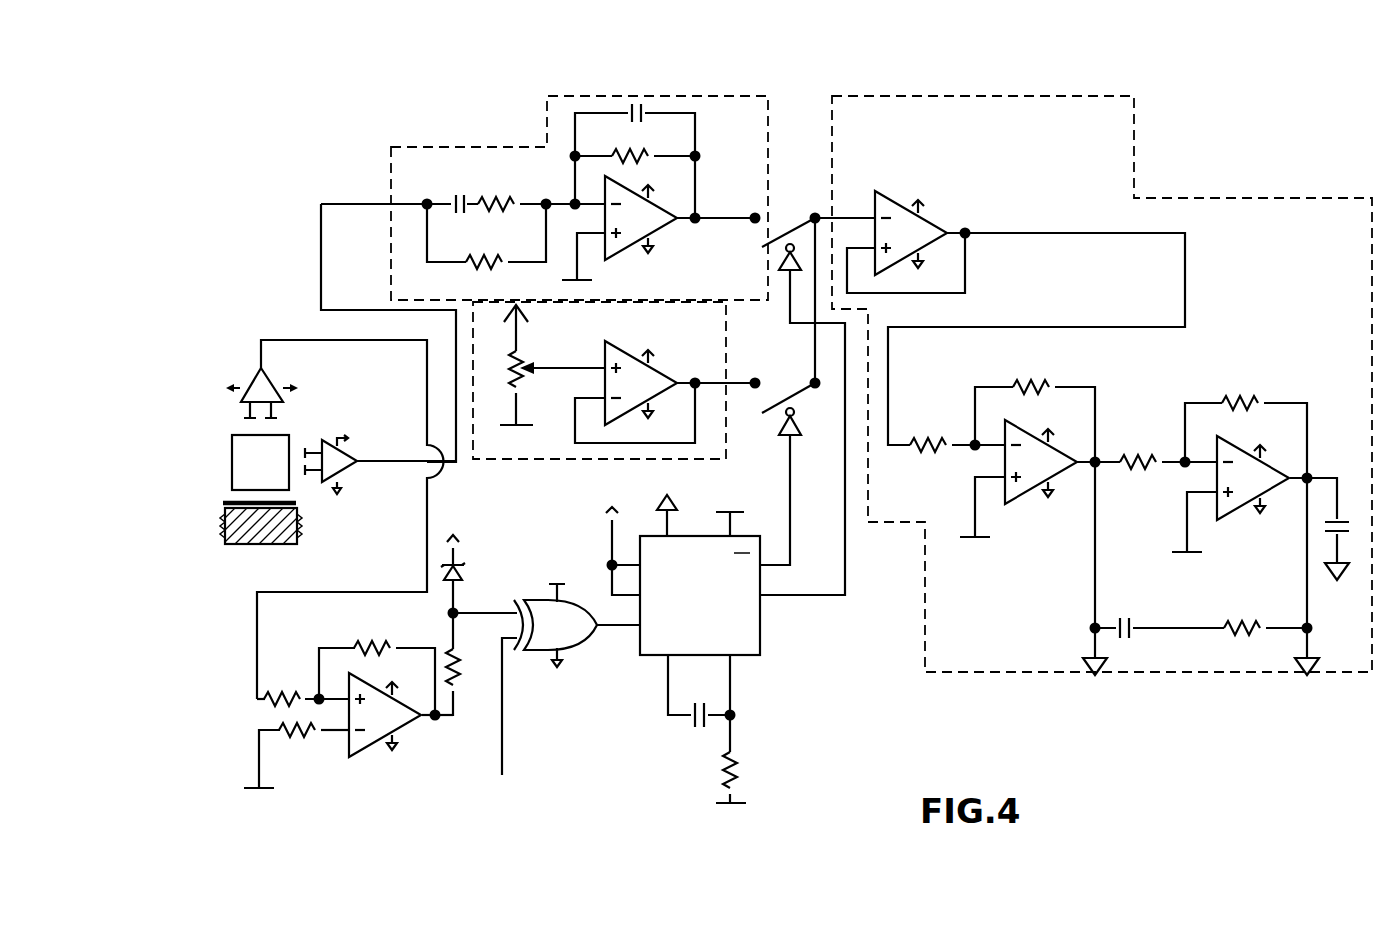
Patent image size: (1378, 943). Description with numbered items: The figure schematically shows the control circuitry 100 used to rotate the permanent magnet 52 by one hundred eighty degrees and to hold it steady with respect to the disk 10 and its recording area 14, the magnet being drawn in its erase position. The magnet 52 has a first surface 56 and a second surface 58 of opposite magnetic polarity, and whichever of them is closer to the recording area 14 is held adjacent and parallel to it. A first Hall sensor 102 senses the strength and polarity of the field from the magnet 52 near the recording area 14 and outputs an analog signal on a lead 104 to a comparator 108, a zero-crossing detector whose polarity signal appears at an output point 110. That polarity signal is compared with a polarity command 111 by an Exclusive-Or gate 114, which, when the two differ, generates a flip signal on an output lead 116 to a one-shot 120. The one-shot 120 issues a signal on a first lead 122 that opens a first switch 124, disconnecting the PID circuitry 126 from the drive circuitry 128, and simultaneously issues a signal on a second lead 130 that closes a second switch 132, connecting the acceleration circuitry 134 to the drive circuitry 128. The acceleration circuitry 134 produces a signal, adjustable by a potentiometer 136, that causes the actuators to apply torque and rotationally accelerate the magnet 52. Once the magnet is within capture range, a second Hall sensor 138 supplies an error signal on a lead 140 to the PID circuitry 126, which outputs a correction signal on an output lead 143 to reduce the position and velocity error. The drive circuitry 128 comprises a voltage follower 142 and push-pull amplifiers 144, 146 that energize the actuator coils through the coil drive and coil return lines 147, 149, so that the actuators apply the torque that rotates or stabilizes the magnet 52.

The disk 10 is at (262, 545).
The recording area 14 is at (243, 503).
The permanent magnet 52 is at (275, 445).
The first surface 56 is at (288, 490).
The second surface 58 is at (238, 436).
The control circuitry 100 is at (1093, 440).
The first Hall sensor 102 is at (266, 368).
The lead 104 is at (255, 659).
The comparator 108 is at (364, 772).
The output point 110 is at (465, 608).
The polarity command 111 is at (505, 765).
The Exclusive-Or gate 114 is at (581, 649).
The output lead 116 is at (615, 627).
The one-shot 120 is at (689, 535).
The first lead 122 is at (850, 565).
The first switch 124 is at (775, 240).
The PID circuitry 126 is at (533, 141).
The drive circuitry 128 is at (1146, 189).
The second lead 130 is at (792, 498).
The second switch 132 is at (802, 377).
The acceleration circuitry 134 is at (617, 405).
The potentiometer 136 is at (522, 361).
The second Hall sensor 138 is at (334, 441).
The lead 140 is at (360, 200).
The voltage follower 142 is at (955, 211).
The output lead 143 is at (703, 216).
The push-pull amplifier 144 is at (1008, 500).
The push-pull amplifier 146 is at (1220, 515).
The coil drive line 147 is at (1098, 730).
The coil return line 149 is at (1307, 740).